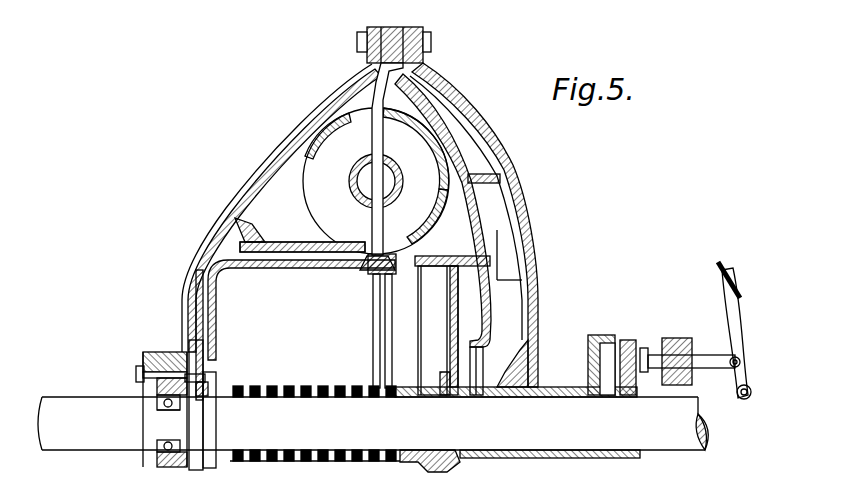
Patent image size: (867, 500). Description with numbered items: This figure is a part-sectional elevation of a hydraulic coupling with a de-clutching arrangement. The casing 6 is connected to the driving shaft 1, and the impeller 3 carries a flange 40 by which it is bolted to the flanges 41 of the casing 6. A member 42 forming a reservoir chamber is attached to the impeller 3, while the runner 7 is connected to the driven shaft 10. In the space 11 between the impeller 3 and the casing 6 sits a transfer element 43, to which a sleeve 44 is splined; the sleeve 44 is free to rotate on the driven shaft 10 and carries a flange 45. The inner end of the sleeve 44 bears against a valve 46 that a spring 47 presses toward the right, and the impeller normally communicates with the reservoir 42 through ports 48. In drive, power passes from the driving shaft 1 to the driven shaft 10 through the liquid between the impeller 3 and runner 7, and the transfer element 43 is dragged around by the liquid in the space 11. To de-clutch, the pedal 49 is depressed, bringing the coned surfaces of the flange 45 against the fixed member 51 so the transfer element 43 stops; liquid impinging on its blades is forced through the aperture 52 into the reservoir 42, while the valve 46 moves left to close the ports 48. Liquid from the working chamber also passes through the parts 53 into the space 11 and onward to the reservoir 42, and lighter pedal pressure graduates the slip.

The driving shaft 1 is at (105, 452).
The impeller 3 is at (444, 178).
The casing 6 is at (282, 150).
The runner 7 is at (364, 181).
The driven shaft 10 is at (667, 440).
The space 11 is at (487, 131).
The flange 40 is at (410, 27).
The flanges 41 is at (364, 32).
The member constituting a reservoir chamber 42 is at (240, 268).
The transfer element 43 is at (508, 234).
The sleeve 44 is at (503, 397).
The flange 45 is at (641, 350).
The valve 46 is at (452, 325).
The spring 47 is at (342, 386).
The ports 48 is at (420, 246).
The pedal 49 is at (730, 275).
The fixed member 51 is at (612, 340).
The aperture 52 is at (478, 356).
The parts 53 is at (386, 72).